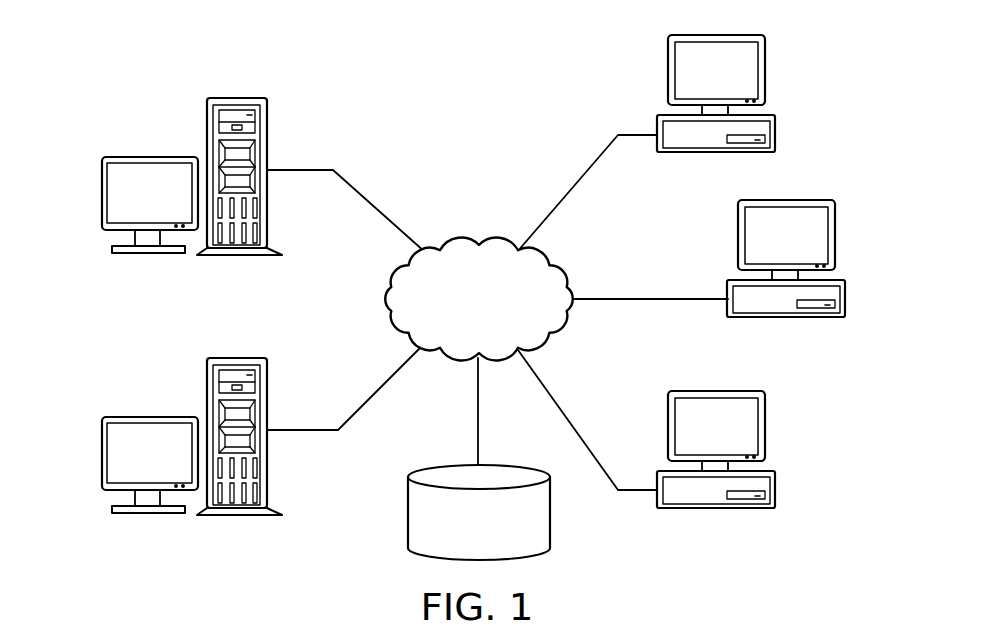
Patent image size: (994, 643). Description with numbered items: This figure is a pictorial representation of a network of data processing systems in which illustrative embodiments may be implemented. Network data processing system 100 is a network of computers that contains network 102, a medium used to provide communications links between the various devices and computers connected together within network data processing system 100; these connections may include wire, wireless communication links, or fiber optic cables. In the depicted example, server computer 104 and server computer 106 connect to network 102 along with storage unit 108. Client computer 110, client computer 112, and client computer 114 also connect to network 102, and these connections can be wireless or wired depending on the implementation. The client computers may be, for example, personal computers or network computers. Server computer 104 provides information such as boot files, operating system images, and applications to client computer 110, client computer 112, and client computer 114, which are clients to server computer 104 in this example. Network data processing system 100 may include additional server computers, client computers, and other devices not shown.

The network data processing system 100 is at (347, 80).
The network 102 is at (450, 247).
The server computer 104 is at (102, 195).
The server computer 106 is at (102, 453).
The storage unit 108 is at (408, 512).
The client computer 110 is at (776, 125).
The client computer 112 is at (848, 311).
The client computer 114 is at (777, 499).